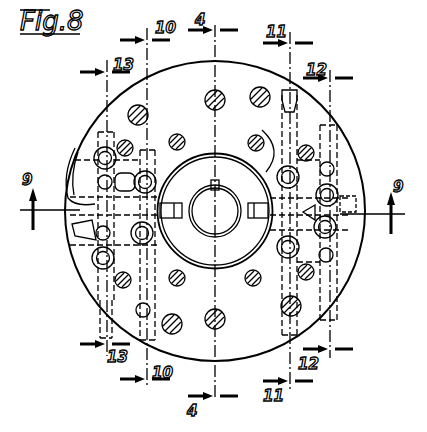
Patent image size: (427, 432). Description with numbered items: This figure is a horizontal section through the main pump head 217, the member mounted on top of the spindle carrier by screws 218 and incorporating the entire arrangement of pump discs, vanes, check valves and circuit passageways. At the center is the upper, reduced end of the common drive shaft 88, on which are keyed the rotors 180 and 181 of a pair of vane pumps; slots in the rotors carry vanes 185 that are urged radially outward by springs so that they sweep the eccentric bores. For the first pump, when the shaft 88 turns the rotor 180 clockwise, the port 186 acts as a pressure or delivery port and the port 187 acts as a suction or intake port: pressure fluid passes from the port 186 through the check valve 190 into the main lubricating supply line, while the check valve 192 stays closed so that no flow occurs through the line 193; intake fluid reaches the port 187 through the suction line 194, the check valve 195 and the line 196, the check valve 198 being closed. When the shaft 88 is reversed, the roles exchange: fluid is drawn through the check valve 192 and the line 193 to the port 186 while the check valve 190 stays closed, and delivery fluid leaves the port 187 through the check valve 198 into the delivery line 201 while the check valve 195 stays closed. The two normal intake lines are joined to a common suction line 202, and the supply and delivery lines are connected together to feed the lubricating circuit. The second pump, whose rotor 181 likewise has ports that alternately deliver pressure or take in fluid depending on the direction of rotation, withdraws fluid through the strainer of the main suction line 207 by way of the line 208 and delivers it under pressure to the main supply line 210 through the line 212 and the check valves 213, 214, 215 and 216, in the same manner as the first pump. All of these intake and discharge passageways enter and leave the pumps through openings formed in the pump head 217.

The common drive shaft 88 is at (215, 211).
The rotor 180 is at (192, 165).
The rotor 181 is at (219, 158).
The vanes 185 is at (259, 206).
The port 186 is at (257, 147).
The port 187 is at (260, 258).
The check valve 190 is at (339, 191).
The check valve 192 is at (277, 177).
The line 193 is at (334, 166).
The suction line 194 is at (276, 242).
The check valve 195 is at (277, 247).
The line 196 is at (340, 262).
The check valve 198 is at (354, 228).
The delivery line 201 is at (354, 200).
The common suction line 202 is at (296, 118).
The main suction line 207 is at (94, 246).
The line 208 is at (86, 234).
The main supply line 210 is at (80, 202).
The line 212 is at (158, 197).
The check valve 213 is at (102, 154).
The check valve 214 is at (148, 179).
The check valve 215 is at (156, 237).
The check valve 216 is at (99, 268).
The main pump head 217 is at (255, 60).
The screws 218 is at (148, 113).